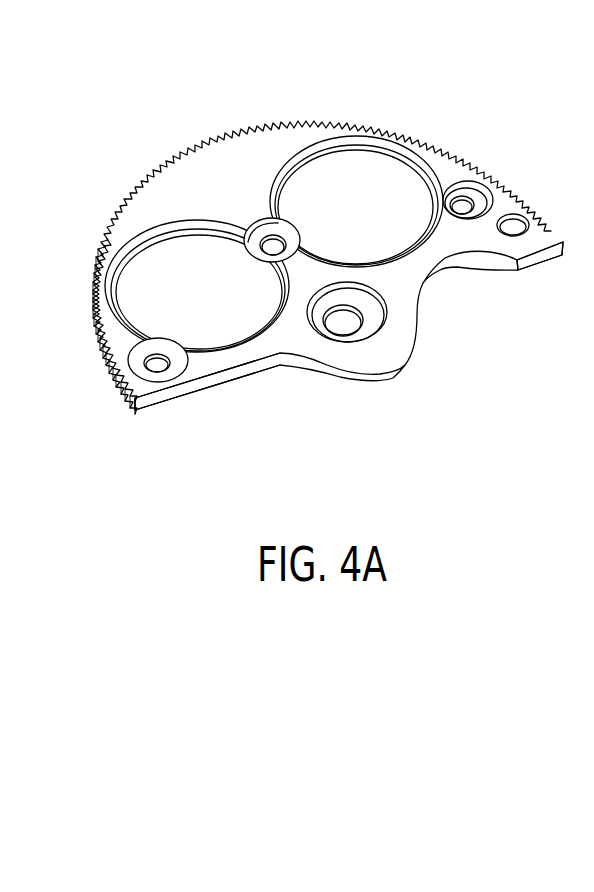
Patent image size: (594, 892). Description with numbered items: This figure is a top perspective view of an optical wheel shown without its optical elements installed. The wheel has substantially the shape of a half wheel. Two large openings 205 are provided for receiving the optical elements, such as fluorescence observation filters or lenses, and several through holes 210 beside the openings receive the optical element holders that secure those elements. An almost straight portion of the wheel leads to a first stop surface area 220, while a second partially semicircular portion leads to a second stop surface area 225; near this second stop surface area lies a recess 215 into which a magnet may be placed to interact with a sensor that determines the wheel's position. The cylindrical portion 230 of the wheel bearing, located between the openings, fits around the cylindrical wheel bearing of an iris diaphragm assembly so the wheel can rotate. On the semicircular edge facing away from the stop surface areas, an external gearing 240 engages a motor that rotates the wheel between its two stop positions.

The openings 205 is at (308, 150).
The through holes 210 is at (273, 246).
The recess 215 is at (513, 228).
The first stop surface area 220 is at (166, 393).
The second stop surface area 225 is at (544, 253).
The cylindrical portion 230 is at (343, 327).
The external gearing 240 is at (150, 172).